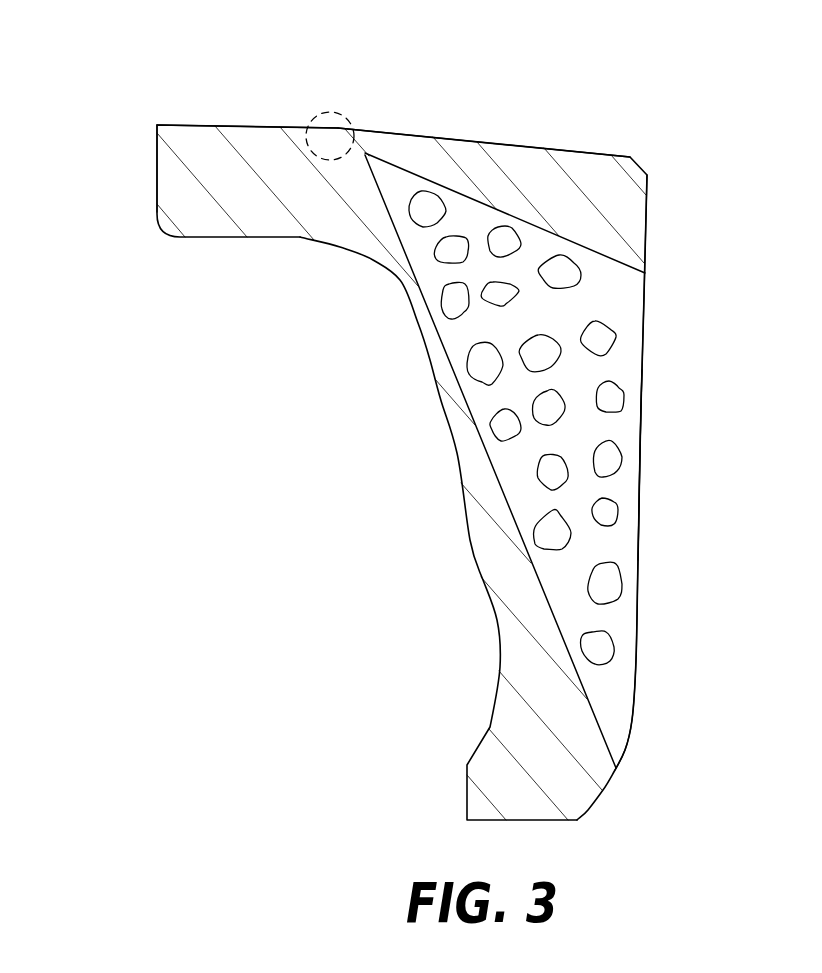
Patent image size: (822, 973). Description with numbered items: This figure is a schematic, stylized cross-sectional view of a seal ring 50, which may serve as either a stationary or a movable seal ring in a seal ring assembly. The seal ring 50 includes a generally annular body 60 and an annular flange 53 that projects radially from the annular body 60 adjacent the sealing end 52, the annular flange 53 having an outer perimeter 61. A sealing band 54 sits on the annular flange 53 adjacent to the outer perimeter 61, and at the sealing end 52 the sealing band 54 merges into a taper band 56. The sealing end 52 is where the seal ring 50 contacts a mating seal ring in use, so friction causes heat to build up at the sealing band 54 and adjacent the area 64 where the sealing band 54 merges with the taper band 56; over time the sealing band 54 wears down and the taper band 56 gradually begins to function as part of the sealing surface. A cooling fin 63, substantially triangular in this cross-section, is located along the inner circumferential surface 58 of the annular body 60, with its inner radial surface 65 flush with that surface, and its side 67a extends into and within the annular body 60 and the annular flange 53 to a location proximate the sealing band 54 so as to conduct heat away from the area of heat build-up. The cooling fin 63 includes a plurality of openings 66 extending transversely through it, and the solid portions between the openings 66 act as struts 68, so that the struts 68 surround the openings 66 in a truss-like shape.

The seal ring 50 is at (348, 557).
The sealing end 52 is at (461, 90).
The annular flange 53 is at (320, 216).
The sealing band 54 is at (252, 128).
The taper band 56 is at (550, 150).
The inner circumferential surface 58 is at (647, 211).
The annular body 60 is at (550, 756).
The outer perimeter 61 is at (157, 172).
The cooling fin 63 is at (615, 262).
The area where sealing band merges with taper band 64 is at (346, 120).
The inner radial surface 65 is at (641, 463).
The openings 66 is at (607, 447).
The side of cooling fin 67a is at (620, 548).
The struts 68 is at (557, 562).